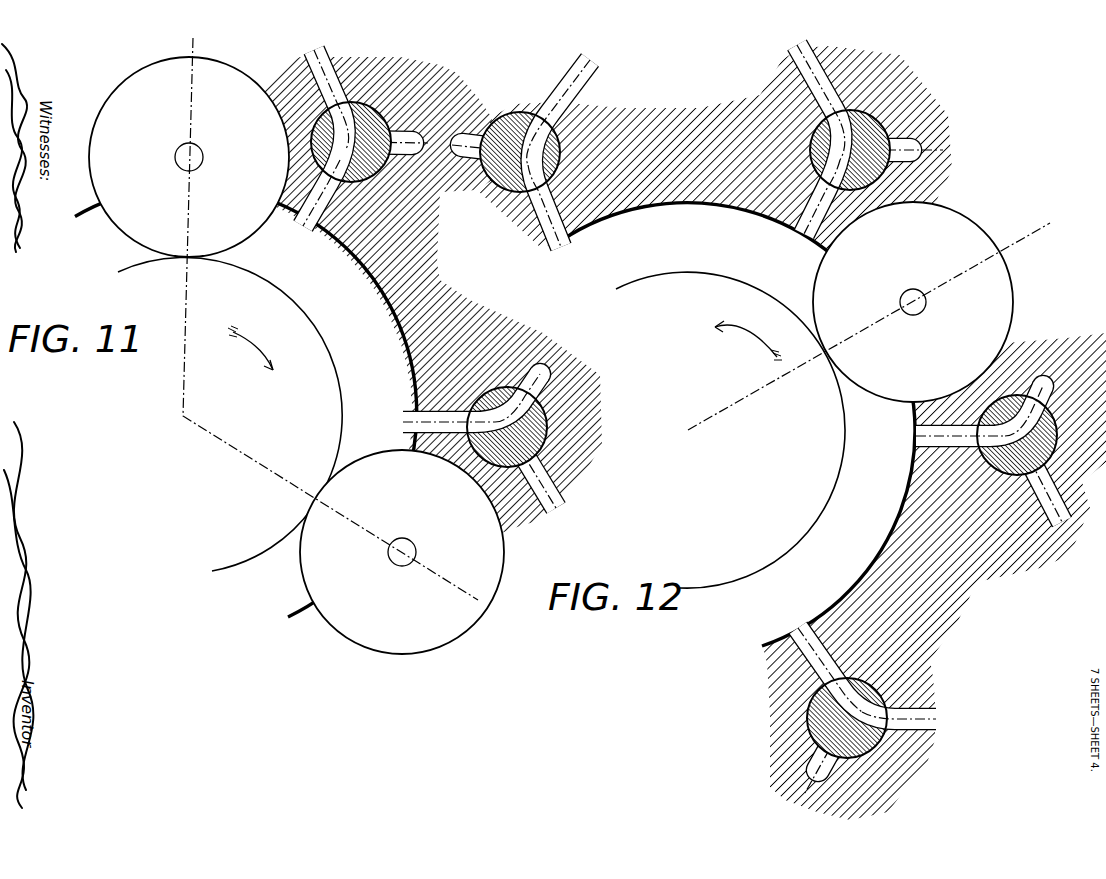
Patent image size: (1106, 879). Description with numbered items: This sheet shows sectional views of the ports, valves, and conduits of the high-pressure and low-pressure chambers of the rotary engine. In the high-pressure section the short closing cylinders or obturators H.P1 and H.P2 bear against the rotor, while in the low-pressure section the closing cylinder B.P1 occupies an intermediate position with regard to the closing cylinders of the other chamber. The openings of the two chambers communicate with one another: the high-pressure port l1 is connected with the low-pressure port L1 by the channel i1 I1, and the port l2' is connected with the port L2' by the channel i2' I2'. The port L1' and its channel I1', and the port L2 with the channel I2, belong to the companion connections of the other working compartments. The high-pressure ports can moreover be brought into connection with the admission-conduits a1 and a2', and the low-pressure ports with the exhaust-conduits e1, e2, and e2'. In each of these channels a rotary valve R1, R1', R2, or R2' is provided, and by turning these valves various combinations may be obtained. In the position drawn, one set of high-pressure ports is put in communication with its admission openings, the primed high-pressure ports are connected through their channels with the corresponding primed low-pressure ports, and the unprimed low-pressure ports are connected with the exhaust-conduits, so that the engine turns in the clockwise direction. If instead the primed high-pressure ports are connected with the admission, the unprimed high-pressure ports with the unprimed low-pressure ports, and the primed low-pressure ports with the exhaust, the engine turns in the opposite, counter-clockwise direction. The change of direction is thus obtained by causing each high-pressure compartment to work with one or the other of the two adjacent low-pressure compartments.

In FIG. 11, the high-pressure piston 1 H.P1 is at (189, 157).
In FIG. 11, the high-pressure piston 2 H.P2 is at (402, 552).
In FIG. 12, the back-pressure piston 1 B.P1 is at (913, 302).
In FIG. 11, the admission-conduit a1 is at (339, 126).
In FIG. 11, the rotary valve R1 is at (376, 107).
In FIG. 12, the rotary valve R1 is at (879, 112).
In FIG. 11, the channel i1 is at (399, 152).
In FIG. 11, the port l1 is at (311, 211).
In FIG. 11, the port l2' is at (467, 415).
In FIG. 11, the channel i2' is at (525, 372).
In FIG. 11, the rotary valve R2' is at (559, 427).
In FIG. 12, the rotary valve R2' is at (1041, 435).
In FIG. 11, the admission-conduit a2' is at (551, 483).
In FIG. 12, the rotary valve R1' is at (520, 130).
In FIG. 12, the exhaust-conduit e1 is at (686, 105).
In FIG. 12, the channel I1' is at (486, 174).
In FIG. 12, the port L1' is at (544, 167).
In FIG. 12, the channel I1 is at (907, 160).
In FIG. 12, the port L1 is at (836, 159).
In FIG. 12, the channel I2' is at (1053, 384).
In FIG. 12, the port L2' is at (972, 425).
In FIG. 12, the exhaust-conduit e2' is at (1058, 483).
In FIG. 12, the port L2 is at (857, 680).
In FIG. 12, the exhaust-conduit e2 is at (917, 732).
In FIG. 12, the rotary valve R2 is at (862, 760).
In FIG. 12, the channel I2 is at (822, 789).